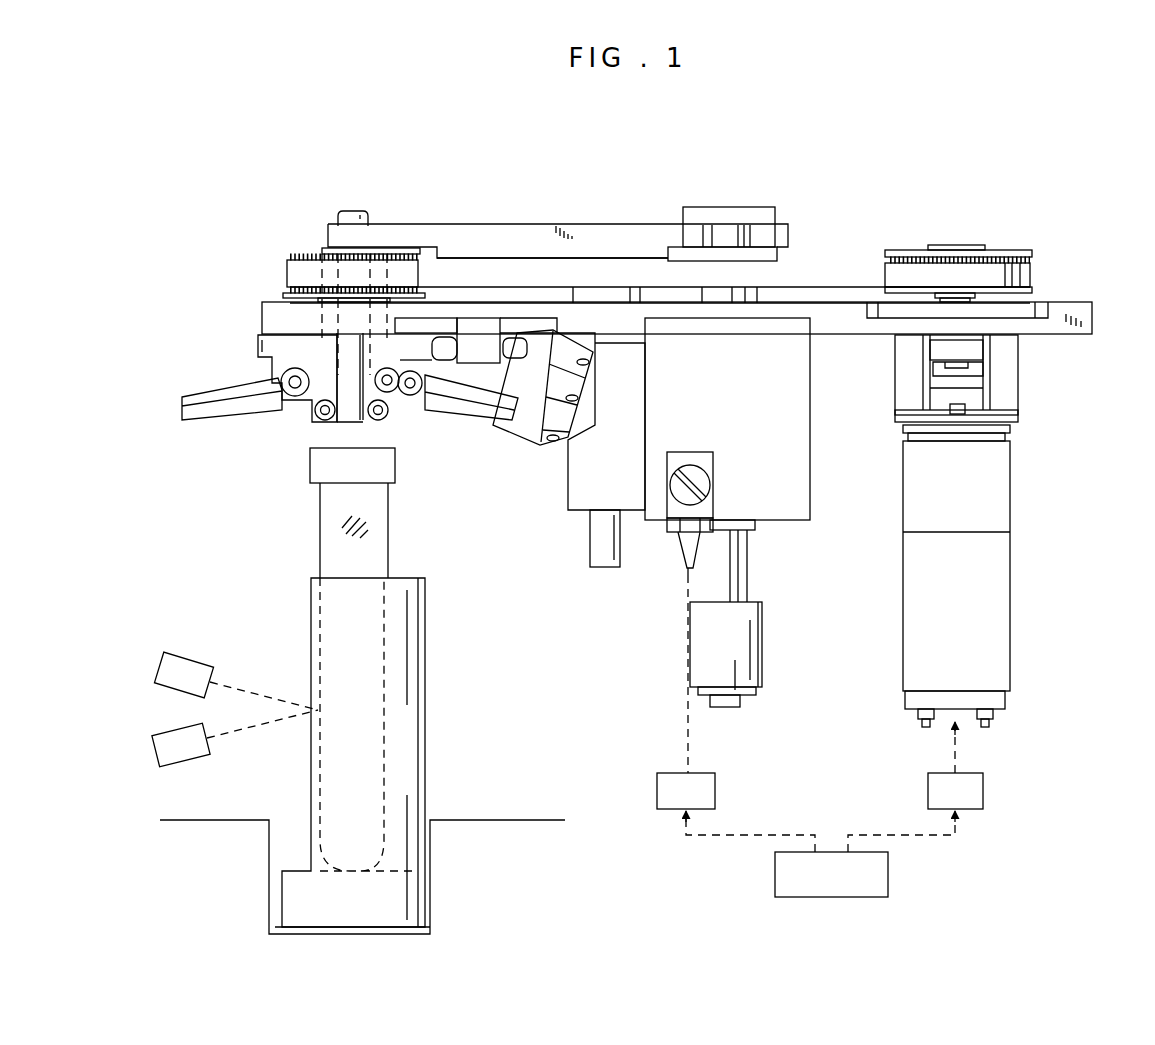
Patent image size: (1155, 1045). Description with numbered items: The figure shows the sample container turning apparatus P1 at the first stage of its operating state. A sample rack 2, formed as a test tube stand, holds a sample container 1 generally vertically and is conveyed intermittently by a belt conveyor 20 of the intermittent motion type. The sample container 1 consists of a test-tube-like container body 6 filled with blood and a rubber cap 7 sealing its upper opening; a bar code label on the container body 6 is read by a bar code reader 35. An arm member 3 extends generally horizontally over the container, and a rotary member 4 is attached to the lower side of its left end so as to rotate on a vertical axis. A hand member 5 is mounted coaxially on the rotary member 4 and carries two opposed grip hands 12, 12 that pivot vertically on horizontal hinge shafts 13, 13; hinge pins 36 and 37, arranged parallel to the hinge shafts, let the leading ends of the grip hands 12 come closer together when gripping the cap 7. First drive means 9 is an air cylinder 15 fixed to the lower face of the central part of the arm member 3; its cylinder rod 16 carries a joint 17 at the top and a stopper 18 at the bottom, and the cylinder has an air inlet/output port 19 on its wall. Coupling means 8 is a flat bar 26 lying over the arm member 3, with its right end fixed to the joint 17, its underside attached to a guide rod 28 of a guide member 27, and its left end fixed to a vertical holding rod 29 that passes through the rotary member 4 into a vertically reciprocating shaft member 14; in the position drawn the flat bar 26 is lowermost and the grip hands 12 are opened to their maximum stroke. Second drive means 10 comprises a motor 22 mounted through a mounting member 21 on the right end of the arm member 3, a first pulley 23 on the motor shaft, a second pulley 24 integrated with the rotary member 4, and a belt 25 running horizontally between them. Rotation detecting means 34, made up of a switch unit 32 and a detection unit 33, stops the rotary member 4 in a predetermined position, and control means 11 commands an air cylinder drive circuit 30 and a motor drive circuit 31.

The sample container 1 is at (299, 513).
The sample rack 2 is at (425, 707).
The arm member 3 is at (842, 334).
The rotary member 4 is at (258, 346).
The hand member 5 is at (293, 388).
The container body 6 is at (320, 545).
The rubber cap 7 is at (310, 465).
The coupling means 8 is at (558, 199).
The first drive means 9 is at (698, 512).
The second drive means 10 is at (1001, 531).
The control means 11 is at (885, 877).
The grip hand 12 is at (205, 418).
The hinge shaft 13 is at (295, 397).
The vertical shaft member 14 is at (355, 398).
The air cylinder 15 is at (780, 512).
The cylinder rod 16 is at (750, 588).
The joint 17 is at (742, 207).
The stopper 18 is at (762, 660).
The air inlet/output port 19 is at (675, 553).
The belt conveyor 20 is at (535, 820).
The mounting member 21 is at (1017, 390).
The motor 22 is at (1005, 488).
The first pulley 23 is at (1003, 250).
The second pulley 24 is at (307, 253).
The belt 25 is at (822, 266).
The flat bar 26 is at (483, 233).
The guide member 27 is at (575, 530).
The guide rod 28 is at (605, 567).
The holding rod 29 is at (348, 211).
The air cylinder drive circuit 30 is at (665, 812).
The motor drive circuit 31 is at (985, 793).
The switch unit 32 is at (529, 430).
The detection unit 33 is at (445, 350).
The rotation detecting means 34 is at (543, 458).
The bar code reader 35 is at (183, 636).
The hinge pin 36 is at (392, 393).
The hinge pin 37 is at (329, 420).
The sample container turning apparatus P1 is at (490, 170).